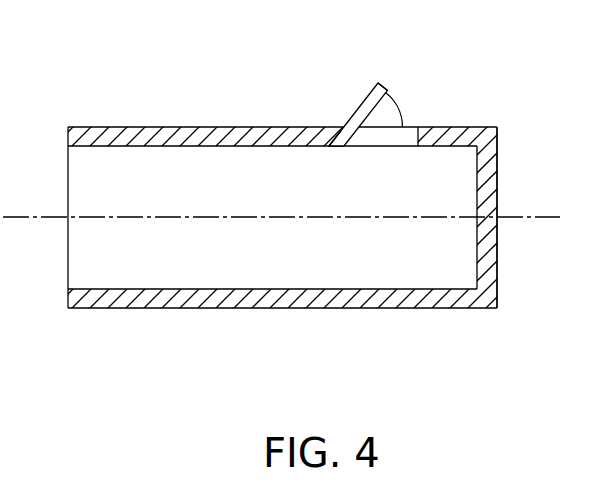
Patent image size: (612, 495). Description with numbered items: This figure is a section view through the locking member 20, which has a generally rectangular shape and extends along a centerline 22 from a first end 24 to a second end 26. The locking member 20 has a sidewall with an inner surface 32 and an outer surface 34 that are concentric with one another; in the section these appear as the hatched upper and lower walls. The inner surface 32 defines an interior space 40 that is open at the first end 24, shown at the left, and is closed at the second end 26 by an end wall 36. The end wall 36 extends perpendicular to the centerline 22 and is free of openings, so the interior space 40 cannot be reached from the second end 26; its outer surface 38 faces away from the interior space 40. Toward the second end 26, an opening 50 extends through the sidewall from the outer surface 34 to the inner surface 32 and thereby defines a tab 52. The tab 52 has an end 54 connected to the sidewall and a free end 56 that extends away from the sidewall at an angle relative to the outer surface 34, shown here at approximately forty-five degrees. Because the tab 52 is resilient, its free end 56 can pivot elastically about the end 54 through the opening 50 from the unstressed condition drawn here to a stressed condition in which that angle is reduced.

The locking member 20 is at (101, 107).
The centerline 22 is at (548, 220).
The first end 24 is at (73, 322).
The second end 26 is at (505, 334).
The inner surface 32 is at (223, 147).
The outer surface 34 is at (183, 127).
The end wall 36 is at (492, 170).
The outer surface of end wall 38 is at (497, 276).
The interior space 40 is at (286, 272).
The opening 50 is at (379, 150).
The tab 52 is at (368, 95).
The end of tab 54 is at (340, 128).
The free end of tab 56 is at (384, 84).